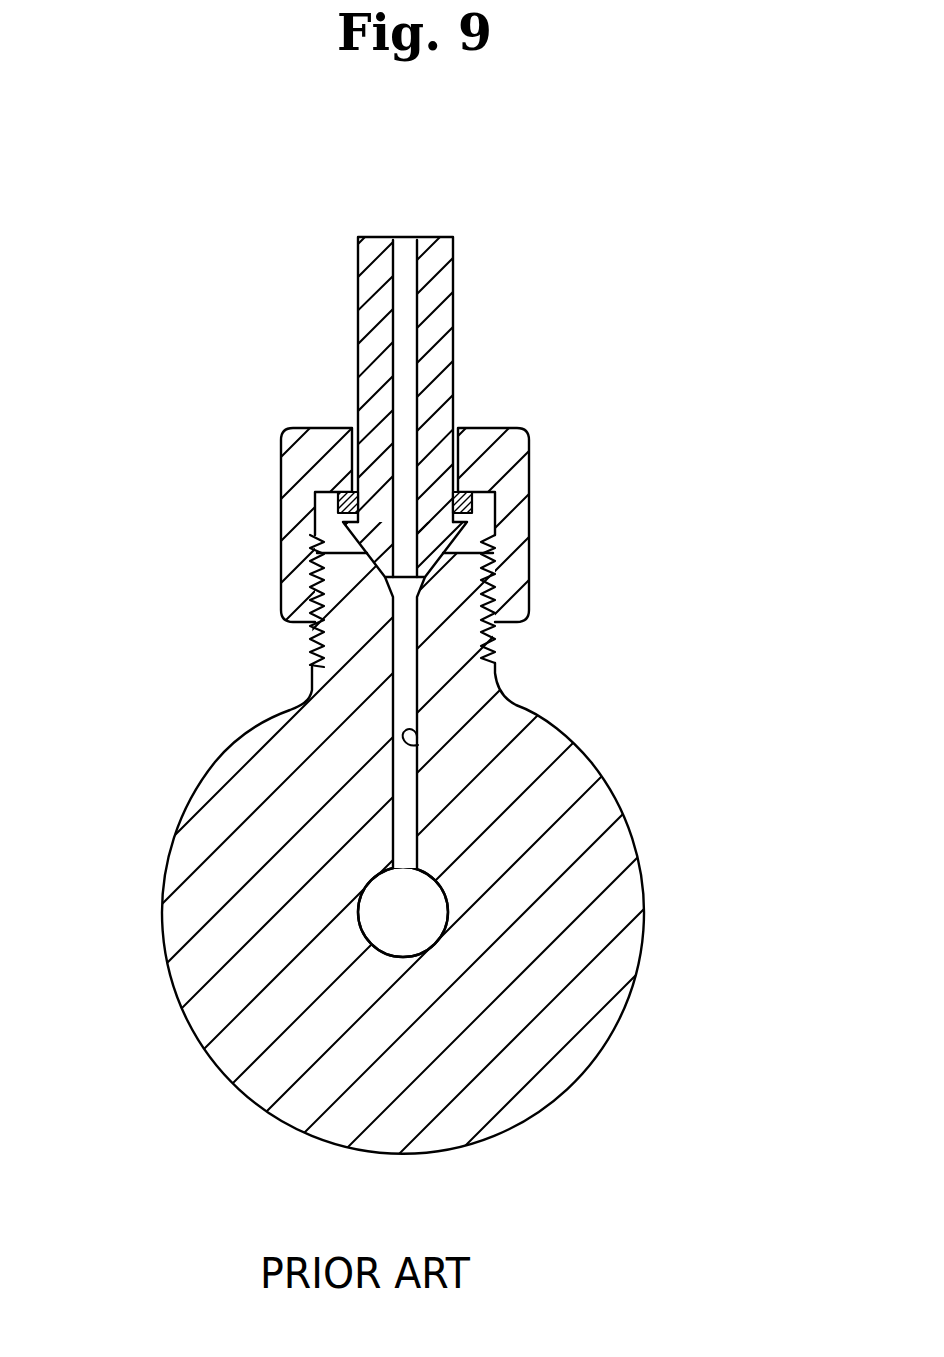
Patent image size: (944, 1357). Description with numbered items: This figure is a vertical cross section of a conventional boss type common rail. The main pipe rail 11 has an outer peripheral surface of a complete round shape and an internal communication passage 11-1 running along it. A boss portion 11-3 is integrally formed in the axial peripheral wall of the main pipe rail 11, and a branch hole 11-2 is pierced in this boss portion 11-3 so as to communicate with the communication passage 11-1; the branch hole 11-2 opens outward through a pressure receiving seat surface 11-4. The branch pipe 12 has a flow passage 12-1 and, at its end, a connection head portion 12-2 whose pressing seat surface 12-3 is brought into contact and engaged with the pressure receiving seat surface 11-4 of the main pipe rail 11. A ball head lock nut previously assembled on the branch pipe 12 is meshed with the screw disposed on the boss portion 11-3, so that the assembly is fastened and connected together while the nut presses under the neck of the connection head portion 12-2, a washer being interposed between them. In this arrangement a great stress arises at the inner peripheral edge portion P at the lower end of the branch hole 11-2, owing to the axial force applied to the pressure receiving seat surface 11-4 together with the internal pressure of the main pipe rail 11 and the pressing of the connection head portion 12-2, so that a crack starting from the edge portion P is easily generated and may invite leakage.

The main pipe rail 11 is at (592, 812).
The communication passage 11-1 is at (447, 903).
The branch hole 11-2 is at (418, 745).
The boss portion 11-3 is at (490, 640).
The pressure receiving seat surface 11-4 is at (384, 578).
The branch pipe 12 is at (455, 297).
The flow passage 12-1 is at (419, 258).
The connection head portion 12-2 is at (430, 557).
The pressing seat surface 12-3 is at (388, 586).
The inner peripheral edge portion P is at (395, 872).